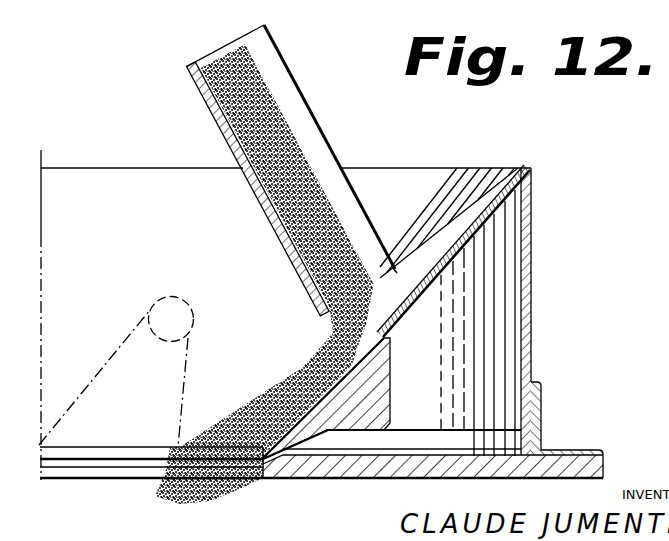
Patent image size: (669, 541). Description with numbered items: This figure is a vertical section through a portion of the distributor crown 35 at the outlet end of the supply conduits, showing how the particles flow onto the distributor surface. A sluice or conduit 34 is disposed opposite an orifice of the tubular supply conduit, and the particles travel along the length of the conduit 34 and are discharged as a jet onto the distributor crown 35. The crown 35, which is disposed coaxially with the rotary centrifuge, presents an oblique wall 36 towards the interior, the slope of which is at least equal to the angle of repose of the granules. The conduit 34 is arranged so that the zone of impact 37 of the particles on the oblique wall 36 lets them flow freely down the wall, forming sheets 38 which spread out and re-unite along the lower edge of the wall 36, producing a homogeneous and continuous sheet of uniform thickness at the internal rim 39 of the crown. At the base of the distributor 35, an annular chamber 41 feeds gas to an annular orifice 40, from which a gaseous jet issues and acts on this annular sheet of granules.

The sluice or conduit 34 is at (212, 107).
The distributor crown 35 is at (538, 348).
The oblique wall 36 is at (495, 200).
The zone of impact 37 is at (183, 313).
The sheets 38 is at (160, 383).
The internal rim 39 is at (232, 460).
The annular orifice 40 is at (285, 465).
The annular chamber 41 is at (503, 260).